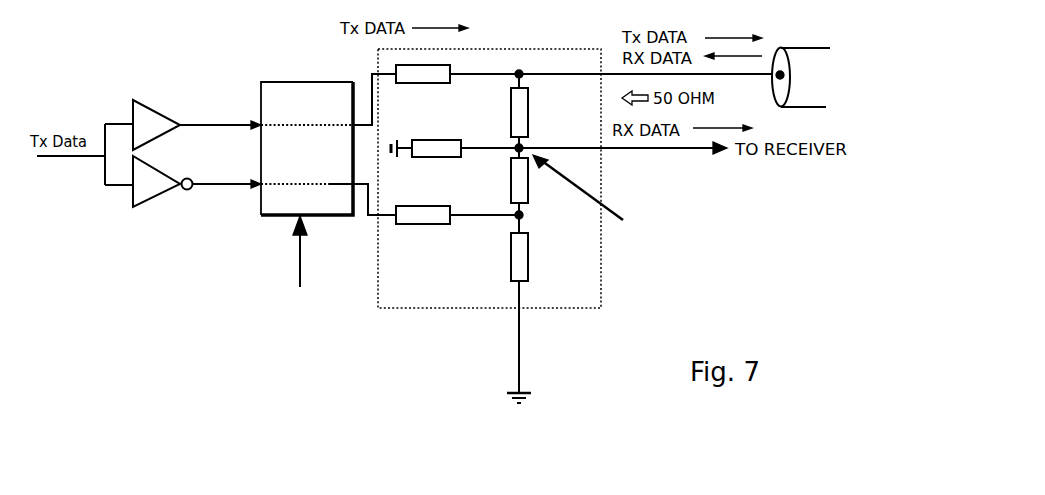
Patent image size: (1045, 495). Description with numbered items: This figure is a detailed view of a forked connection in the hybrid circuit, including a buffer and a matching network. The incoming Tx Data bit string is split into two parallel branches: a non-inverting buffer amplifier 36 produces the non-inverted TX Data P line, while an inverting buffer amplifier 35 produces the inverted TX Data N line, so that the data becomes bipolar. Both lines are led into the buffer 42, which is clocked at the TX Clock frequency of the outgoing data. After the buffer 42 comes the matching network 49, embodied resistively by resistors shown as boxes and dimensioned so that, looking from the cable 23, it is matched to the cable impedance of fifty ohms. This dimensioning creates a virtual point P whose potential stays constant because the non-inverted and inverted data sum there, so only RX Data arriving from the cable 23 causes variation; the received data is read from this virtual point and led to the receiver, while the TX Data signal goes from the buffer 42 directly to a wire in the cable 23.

The non-inverting buffer amplifier 36 is at (149, 101).
The inverting buffer amplifier 35 is at (160, 200).
The buffer 42 is at (298, 81).
The matching network 49 is at (413, 315).
The cable 23 is at (812, 43).